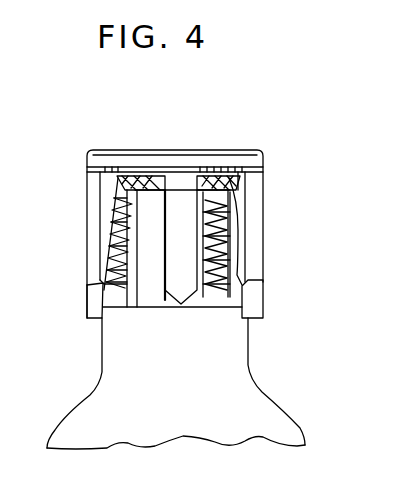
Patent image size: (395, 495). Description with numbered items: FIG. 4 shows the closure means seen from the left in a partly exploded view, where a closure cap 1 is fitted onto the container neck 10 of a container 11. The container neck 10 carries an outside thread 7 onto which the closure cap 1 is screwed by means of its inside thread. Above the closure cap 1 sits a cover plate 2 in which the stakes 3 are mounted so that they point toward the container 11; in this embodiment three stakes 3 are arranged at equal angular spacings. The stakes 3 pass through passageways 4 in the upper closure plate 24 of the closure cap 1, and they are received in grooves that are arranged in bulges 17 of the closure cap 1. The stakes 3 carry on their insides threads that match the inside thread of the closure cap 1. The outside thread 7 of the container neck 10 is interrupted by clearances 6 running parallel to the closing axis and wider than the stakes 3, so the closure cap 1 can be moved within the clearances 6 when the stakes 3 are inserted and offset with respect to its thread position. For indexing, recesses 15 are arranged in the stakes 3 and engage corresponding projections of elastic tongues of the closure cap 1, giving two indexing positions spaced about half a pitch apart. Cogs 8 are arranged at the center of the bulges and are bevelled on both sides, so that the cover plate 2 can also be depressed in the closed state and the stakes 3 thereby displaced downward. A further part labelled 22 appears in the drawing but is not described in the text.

The closure cap 1 is at (242, 217).
The cover plate 2 is at (262, 158).
The stakes 3 is at (108, 163).
The passageways 4 is at (205, 180).
The clearances 6 is at (148, 268).
The outside thread 7 is at (128, 282).
The cogs 8 is at (105, 302).
The container neck 10 is at (217, 203).
The container 11 is at (288, 431).
The recesses 15 is at (180, 279).
The bulges 17 is at (87, 215).
The retaining bead 22 is at (242, 307).
The upper closure plate 24 is at (140, 178).